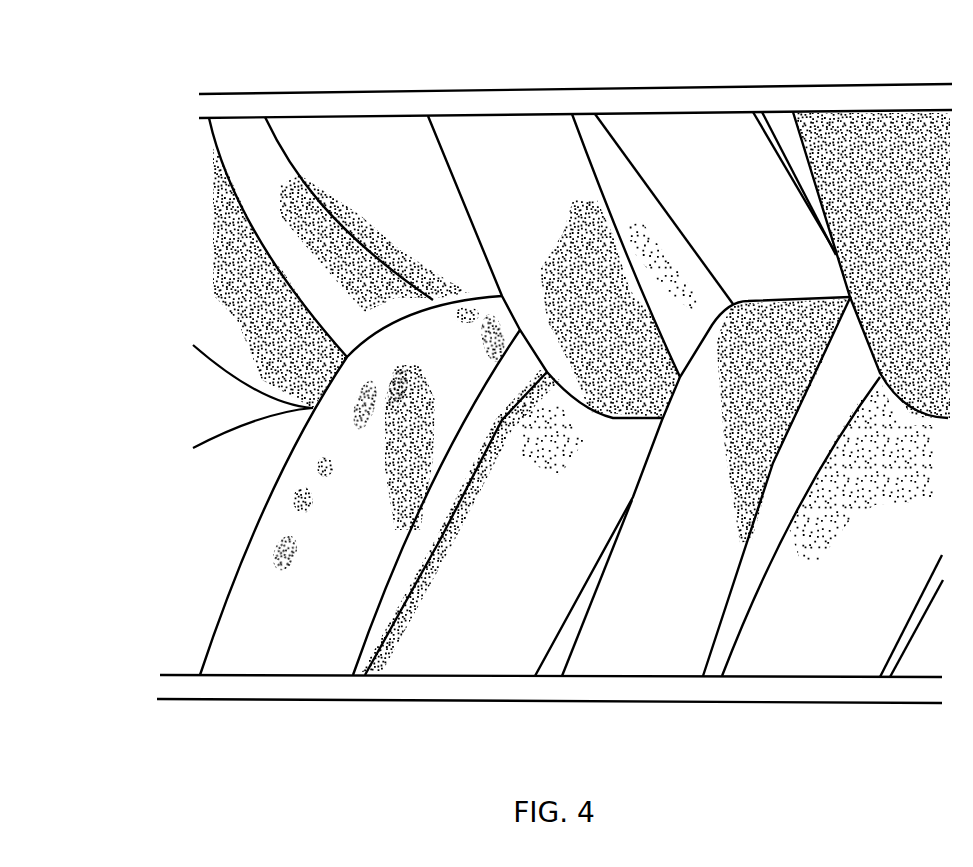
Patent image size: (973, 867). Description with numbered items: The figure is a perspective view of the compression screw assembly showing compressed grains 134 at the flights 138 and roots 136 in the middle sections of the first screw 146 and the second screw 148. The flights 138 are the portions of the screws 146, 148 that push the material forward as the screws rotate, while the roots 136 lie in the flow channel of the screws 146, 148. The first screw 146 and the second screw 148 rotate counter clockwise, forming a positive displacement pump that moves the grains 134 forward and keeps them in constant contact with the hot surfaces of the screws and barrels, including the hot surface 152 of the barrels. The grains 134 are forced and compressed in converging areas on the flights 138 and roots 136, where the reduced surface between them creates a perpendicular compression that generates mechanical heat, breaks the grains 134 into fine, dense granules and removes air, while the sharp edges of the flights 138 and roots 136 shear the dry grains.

The grains 134 is at (593, 257).
The roots 136 is at (383, 178).
The flights 138 is at (502, 178).
The first screw 146 is at (206, 309).
The second screw 148 is at (206, 507).
The hot surface of the barrels 152 is at (745, 703).